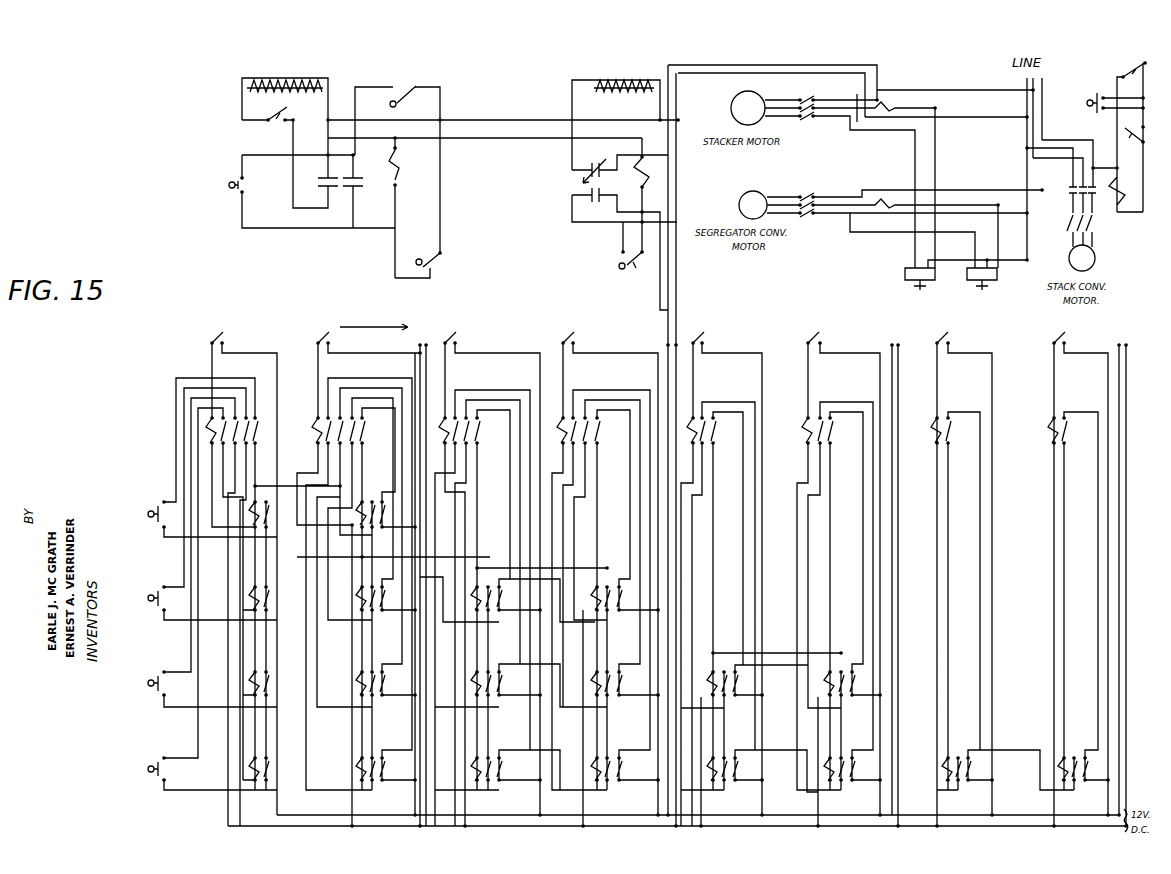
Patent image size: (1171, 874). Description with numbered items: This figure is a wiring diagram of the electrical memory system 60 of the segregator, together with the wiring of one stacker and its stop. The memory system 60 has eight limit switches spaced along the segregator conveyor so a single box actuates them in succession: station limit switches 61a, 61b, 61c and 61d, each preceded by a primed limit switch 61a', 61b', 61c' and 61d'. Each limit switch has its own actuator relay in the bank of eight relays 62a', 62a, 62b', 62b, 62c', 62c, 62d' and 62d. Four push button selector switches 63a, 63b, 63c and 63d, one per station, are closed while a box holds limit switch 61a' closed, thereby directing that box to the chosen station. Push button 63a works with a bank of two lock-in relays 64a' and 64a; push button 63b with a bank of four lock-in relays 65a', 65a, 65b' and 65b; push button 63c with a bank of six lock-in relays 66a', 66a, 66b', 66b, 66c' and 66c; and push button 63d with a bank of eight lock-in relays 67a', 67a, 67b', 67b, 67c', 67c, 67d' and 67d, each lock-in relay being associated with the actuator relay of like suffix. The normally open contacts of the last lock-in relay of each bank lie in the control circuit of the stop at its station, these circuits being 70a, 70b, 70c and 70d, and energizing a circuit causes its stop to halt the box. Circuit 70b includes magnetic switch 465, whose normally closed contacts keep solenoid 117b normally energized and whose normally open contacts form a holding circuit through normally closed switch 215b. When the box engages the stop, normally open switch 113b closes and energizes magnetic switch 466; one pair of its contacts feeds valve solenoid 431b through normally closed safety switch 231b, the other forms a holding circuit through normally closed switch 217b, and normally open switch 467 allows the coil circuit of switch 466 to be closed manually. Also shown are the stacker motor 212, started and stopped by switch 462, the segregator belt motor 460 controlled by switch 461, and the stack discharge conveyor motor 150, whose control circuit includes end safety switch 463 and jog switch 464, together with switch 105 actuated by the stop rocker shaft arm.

The valve solenoid 431b is at (294, 78).
The safety switch 231b is at (268, 122).
The switch 217b is at (398, 103).
The switch 467 is at (236, 192).
The magnetic switch 466 is at (398, 157).
The switch 113b is at (428, 250).
The solenoid 117b is at (618, 78).
The magnetic switch 465 is at (652, 172).
The switch 215b is at (622, 270).
The stacker motor 212 is at (738, 100).
The motor 460 is at (744, 196).
The switch 462 is at (903, 276).
The switch 461 is at (988, 284).
The jog switch 464 is at (1090, 108).
The safety switch 463 is at (1132, 140).
The switch 105 is at (1123, 72).
The electric motor 150 is at (1096, 258).
The electrical memory system 60 is at (71, 360).
The control circuit 70a is at (428, 386).
The control circuit 70b is at (680, 322).
The control circuit 70c is at (904, 518).
The control circuit 70d is at (1127, 520).
The limit switch 61a' is at (209, 328).
The limit switch 61a is at (312, 328).
The limit switch 61b' is at (446, 328).
The limit switch 61b is at (563, 328).
The limit switch 61c' is at (711, 332).
The limit switch 61c is at (815, 328).
The limit switch 61d' is at (942, 328).
The limit switch 61d is at (1060, 328).
The actuator relay 62a' is at (195, 430).
The actuator relay 62a is at (323, 426).
The actuator relay 62b' is at (472, 443).
The actuator relay 62b is at (589, 443).
The actuator relay 62c' is at (713, 443).
The actuator relay 62c is at (828, 443).
The actuator relay 62d' is at (952, 446).
The actuator relay 62d is at (1068, 446).
The push button selector switch 63a is at (145, 527).
The push button selector switch 63b is at (137, 602).
The push button selector switch 63c is at (137, 687).
The push button selector switch 63d is at (137, 773).
The lock-in relay 64a' is at (257, 616).
The lock-in relay 64a is at (373, 616).
The lock-in relay 65a' is at (256, 619).
The lock-in relay 65a is at (376, 615).
The lock-in relay 65b' is at (488, 616).
The lock-in relay 65b is at (606, 616).
The lock-in relay 66a' is at (256, 704).
The lock-in relay 66a is at (376, 701).
The lock-in relay 66b' is at (491, 702).
The lock-in relay 66b is at (609, 702).
The lock-in relay 66c' is at (723, 616).
The lock-in relay 66c is at (839, 616).
The lock-in relay 67a' is at (256, 790).
The lock-in relay 67a is at (376, 786).
The lock-in relay 67b' is at (491, 786).
The lock-in relay 67b is at (610, 786).
The lock-in relay 67c' is at (723, 786).
The lock-in relay 67c is at (839, 786).
The lock-in relay 67d' is at (958, 629).
The lock-in relay 67d is at (1073, 629).